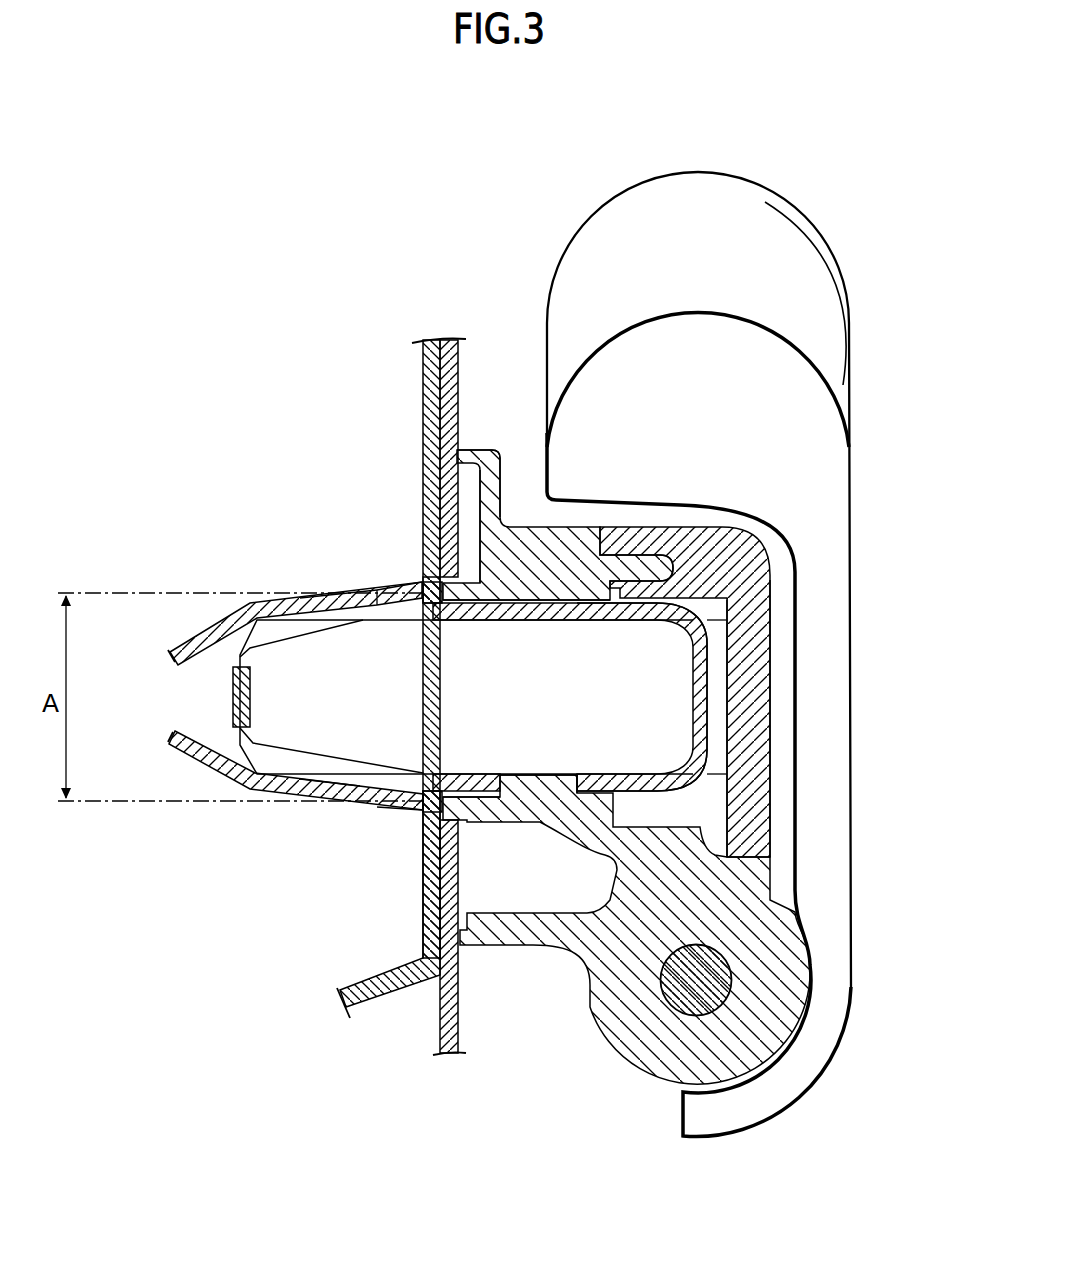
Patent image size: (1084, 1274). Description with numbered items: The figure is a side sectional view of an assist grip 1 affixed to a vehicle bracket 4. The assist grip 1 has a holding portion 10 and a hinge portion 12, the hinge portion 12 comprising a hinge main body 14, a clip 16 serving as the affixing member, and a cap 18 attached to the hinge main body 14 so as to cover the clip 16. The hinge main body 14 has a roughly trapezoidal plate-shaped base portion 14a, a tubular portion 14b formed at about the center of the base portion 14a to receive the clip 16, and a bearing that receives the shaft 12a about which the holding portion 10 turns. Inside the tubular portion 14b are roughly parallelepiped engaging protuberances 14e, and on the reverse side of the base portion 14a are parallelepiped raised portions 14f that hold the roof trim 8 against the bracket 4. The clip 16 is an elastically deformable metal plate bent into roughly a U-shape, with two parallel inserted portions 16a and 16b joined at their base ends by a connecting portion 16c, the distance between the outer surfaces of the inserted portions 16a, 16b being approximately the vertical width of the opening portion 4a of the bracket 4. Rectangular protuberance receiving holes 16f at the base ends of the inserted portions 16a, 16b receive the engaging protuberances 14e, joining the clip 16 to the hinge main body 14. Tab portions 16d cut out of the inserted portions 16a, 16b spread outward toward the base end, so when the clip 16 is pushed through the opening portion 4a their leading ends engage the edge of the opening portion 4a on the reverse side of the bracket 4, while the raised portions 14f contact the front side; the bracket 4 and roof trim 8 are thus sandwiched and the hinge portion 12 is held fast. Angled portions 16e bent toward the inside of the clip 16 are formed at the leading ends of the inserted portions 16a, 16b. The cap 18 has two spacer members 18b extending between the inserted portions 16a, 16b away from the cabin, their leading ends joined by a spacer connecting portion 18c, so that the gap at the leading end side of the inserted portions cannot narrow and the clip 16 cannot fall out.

The assist grip 1 is at (504, 257).
The bracket 4 is at (385, 985).
The opening portion 4a is at (430, 603).
The roof trim 8 is at (452, 1013).
The holding portion 10 is at (850, 268).
The hinge portion 12 is at (768, 545).
The shaft 12a is at (703, 987).
The hinge main body 14 is at (482, 440).
The base portion 14a is at (495, 490).
The tubular portion 14b is at (562, 538).
The engaging protuberance 14e is at (524, 600).
The raised portion 14f is at (463, 605).
The clip 16 is at (271, 806).
The inserted portion 16a is at (403, 594).
The inserted portion 16b is at (343, 796).
The connecting portion 16c is at (702, 702).
The tab portion 16d is at (413, 568).
The angled portion 16e is at (183, 647).
The protuberance receiving hole 16f is at (562, 605).
The cap 18 is at (775, 718).
The spacer member 18b is at (233, 778).
The spacer connecting portion 18c is at (232, 697).